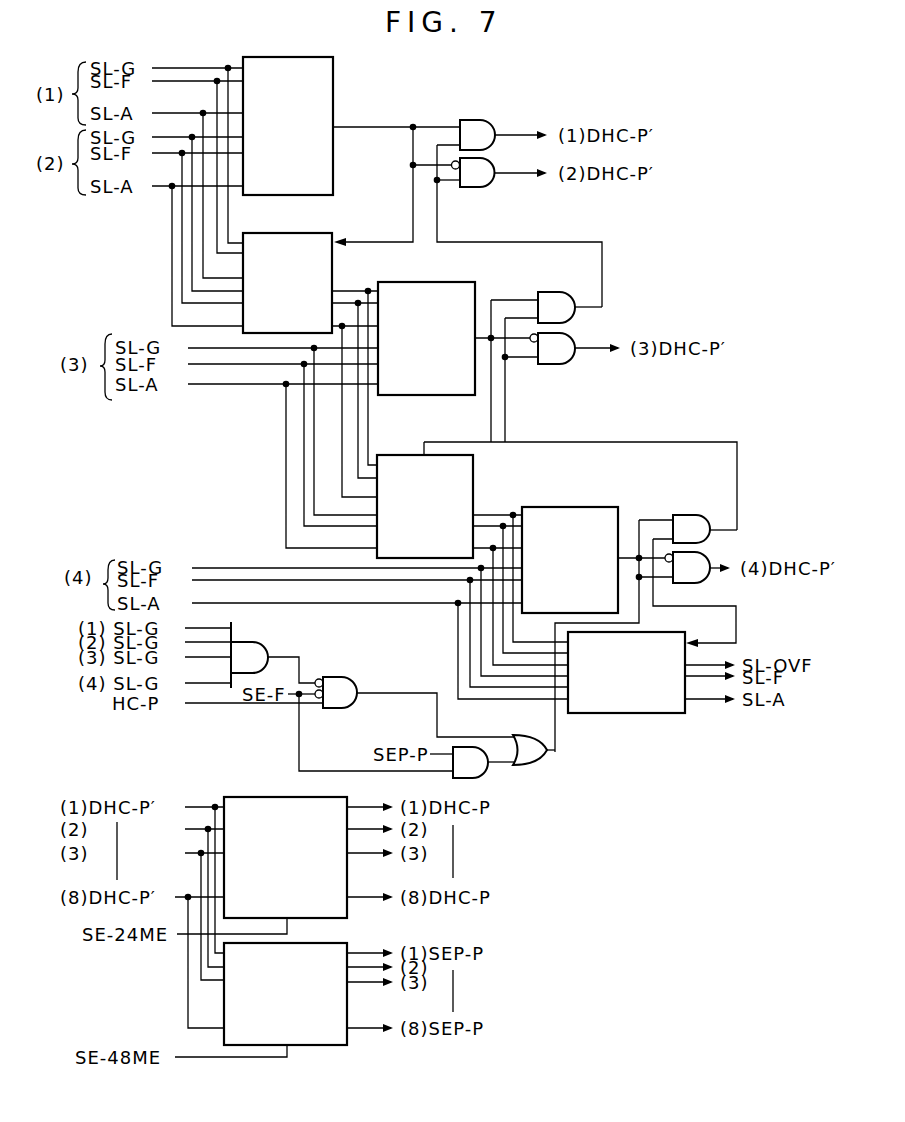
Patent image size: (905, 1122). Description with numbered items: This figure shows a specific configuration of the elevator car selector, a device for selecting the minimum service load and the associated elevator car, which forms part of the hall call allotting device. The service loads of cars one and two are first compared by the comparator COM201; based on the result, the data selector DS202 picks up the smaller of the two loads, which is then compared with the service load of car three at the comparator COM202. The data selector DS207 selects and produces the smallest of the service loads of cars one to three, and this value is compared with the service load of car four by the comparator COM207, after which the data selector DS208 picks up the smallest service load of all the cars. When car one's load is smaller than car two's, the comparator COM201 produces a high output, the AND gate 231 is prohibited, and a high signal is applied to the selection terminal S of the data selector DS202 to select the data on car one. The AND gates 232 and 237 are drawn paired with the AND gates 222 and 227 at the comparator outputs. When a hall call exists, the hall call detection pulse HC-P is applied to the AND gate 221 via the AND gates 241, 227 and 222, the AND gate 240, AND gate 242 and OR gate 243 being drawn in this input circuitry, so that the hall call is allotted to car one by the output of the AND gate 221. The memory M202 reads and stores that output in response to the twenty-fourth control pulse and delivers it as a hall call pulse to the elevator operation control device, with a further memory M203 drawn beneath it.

The comparator COM201 is at (333, 62).
The data selector DS202 is at (332, 246).
The comparator COM202 is at (460, 282).
The data selector DS207 is at (473, 478).
The comparator COM207 is at (592, 508).
The data selector DS208 is at (645, 713).
The memory M202 is at (268, 796).
The memory M203 is at (336, 943).
The AND gate 221 is at (474, 108).
The AND gate 231 is at (470, 187).
The AND gate 222 is at (552, 292).
The AND gate 232 is at (556, 364).
The AND gate 227 is at (692, 514).
The AND gate 237 is at (700, 577).
The AND gate 240 is at (273, 655).
The AND gate 241 is at (366, 668).
The AND gate 242 is at (460, 778).
The OR gate 243 is at (533, 765).